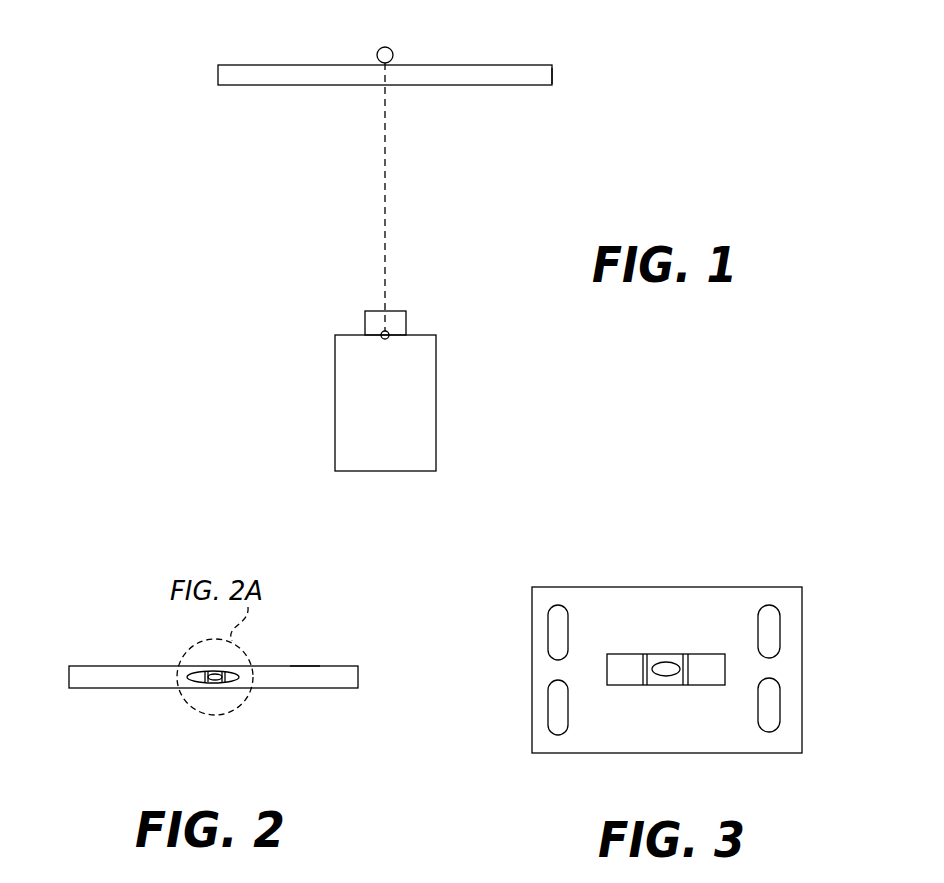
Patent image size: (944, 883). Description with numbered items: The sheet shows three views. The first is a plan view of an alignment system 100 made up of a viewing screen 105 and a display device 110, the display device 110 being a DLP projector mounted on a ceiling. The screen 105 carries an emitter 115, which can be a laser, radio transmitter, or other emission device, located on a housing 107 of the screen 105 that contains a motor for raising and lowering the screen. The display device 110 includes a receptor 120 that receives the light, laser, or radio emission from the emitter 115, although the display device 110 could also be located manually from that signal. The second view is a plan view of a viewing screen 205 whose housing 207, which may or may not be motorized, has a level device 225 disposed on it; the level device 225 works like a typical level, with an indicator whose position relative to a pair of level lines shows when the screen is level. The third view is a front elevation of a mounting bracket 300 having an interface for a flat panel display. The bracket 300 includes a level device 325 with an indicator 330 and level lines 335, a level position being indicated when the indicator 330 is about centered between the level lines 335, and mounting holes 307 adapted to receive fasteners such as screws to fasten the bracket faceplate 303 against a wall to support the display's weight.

In FIG. 1, the alignment system 100 is at (262, 210).
In FIG. 1, the viewing screen 105 is at (481, 88).
In FIG. 1, the housing 107 is at (552, 72).
In FIG. 1, the display device 110 is at (424, 388).
In FIG. 1, the emitter 115 is at (393, 50).
In FIG. 1, the receptor 120 is at (389, 332).
In FIG. 2, the viewing screen 205 is at (347, 688).
In FIG. 2, the housing 207 is at (305, 672).
In FIG. 2, the level device 225 is at (232, 680).
In FIG. 3, the mounting bracket 300 is at (737, 532).
In FIG. 3, the bracket faceplate 303 is at (748, 595).
In FIG. 3, the mounting holes 307 is at (554, 695).
In FIG. 3, the level device 325 is at (713, 668).
In FIG. 3, the indicator 330 is at (666, 676).
In FIG. 3, the level lines 335 is at (688, 654).